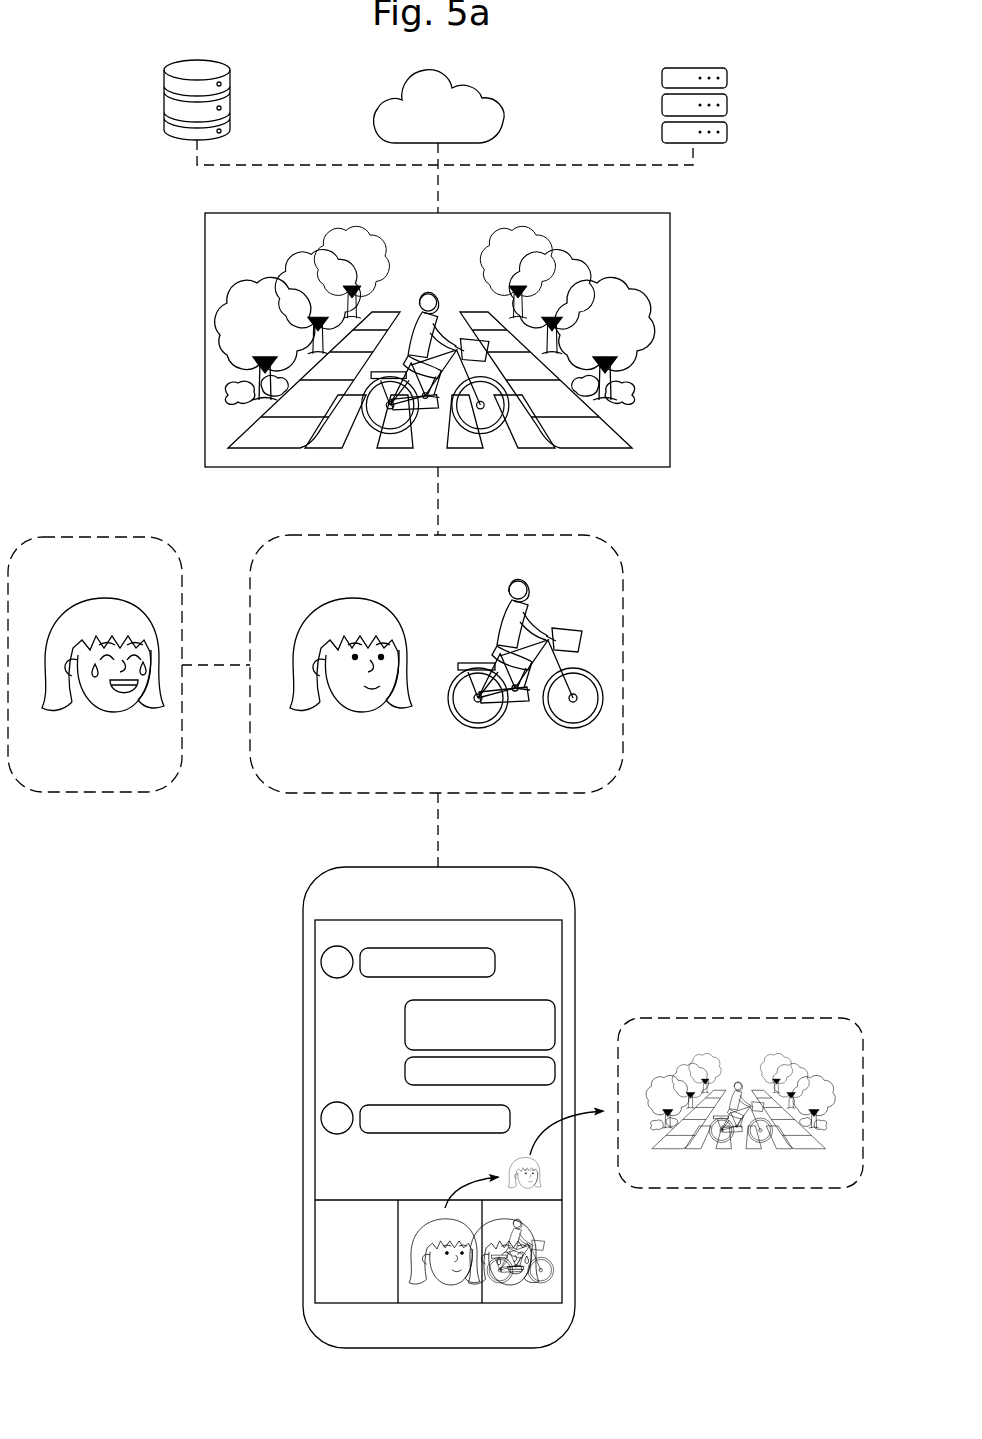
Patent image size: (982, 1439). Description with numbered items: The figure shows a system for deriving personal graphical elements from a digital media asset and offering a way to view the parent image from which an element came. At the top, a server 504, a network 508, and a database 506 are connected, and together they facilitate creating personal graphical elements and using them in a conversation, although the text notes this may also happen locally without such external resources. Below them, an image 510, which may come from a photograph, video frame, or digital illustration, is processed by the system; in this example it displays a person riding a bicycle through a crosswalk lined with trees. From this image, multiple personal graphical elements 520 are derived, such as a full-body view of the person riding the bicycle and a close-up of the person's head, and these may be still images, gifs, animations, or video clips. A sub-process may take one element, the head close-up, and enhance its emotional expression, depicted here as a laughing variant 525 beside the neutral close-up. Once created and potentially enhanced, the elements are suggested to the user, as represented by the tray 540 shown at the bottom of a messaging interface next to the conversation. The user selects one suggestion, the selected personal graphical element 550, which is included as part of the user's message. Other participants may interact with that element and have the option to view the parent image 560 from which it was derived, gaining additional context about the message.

The server 504 is at (727, 100).
The database 506 is at (163, 106).
The network 508 is at (500, 108).
The image 510 is at (682, 341).
The personal graphical elements 520 is at (628, 632).
The alternative object variant 525 is at (85, 533).
The suggested personal graphical elements 540 is at (333, 1232).
The selected personal graphical element 550 is at (543, 1178).
The parent image 560 is at (733, 1014).